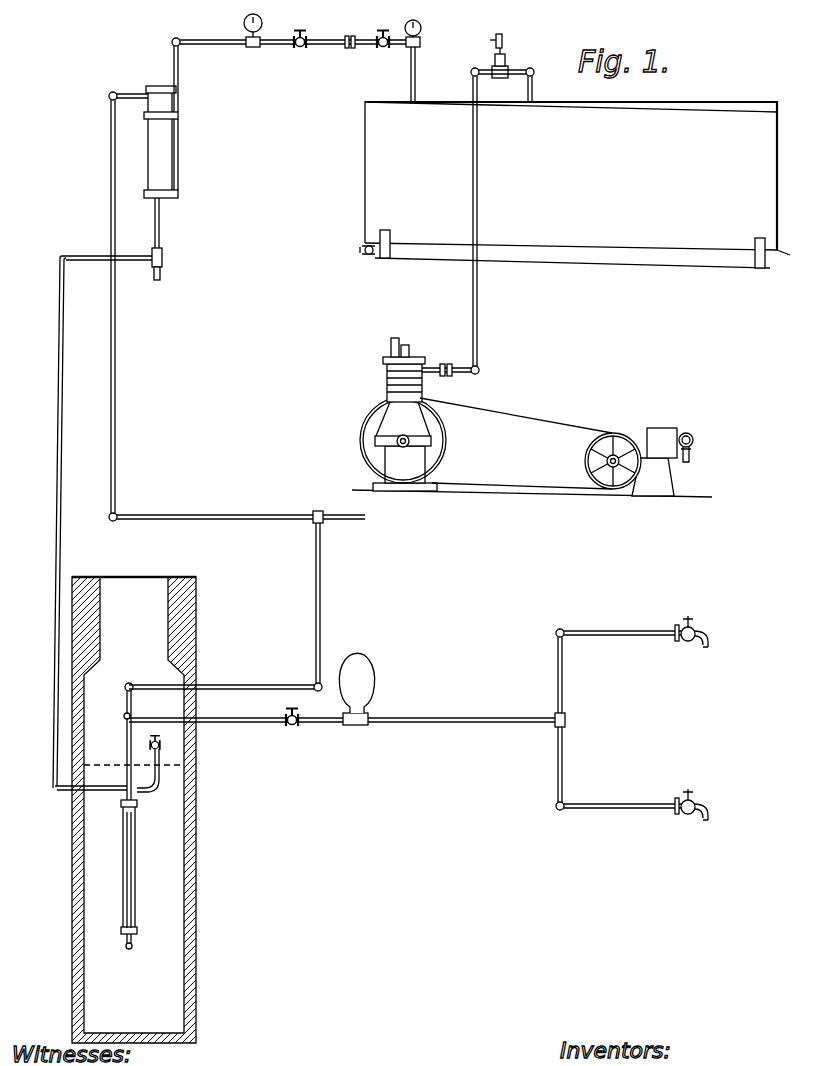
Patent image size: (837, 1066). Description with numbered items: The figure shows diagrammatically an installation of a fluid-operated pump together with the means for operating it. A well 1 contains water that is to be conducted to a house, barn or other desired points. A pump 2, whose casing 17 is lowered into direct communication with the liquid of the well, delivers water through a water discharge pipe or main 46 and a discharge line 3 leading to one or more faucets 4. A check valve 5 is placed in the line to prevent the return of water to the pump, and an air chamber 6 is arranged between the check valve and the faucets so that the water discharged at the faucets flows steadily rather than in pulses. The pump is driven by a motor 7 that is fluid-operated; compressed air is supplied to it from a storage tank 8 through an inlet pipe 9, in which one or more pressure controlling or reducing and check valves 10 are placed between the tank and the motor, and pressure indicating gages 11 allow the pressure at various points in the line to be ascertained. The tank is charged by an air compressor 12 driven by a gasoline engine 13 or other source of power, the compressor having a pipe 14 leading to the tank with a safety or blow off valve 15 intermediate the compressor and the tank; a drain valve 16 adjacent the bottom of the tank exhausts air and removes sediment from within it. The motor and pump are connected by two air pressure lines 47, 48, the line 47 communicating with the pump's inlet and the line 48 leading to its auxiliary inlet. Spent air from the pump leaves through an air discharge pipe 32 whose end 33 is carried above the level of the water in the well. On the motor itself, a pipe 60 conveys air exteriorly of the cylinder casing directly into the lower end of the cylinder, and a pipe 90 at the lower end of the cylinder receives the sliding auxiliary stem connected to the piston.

The well 1 is at (180, 906).
The pump 2 is at (135, 846).
The discharge line 3 is at (431, 723).
The faucets 4 is at (697, 648).
The check valve 5 is at (292, 730).
The air chamber 6 is at (372, 672).
The motor 7 is at (169, 176).
The storage tank 8 is at (680, 116).
The inlet pipe 9 is at (240, 45).
The pressure controlling or reducing and check valves 10 is at (301, 49).
The pressure indicating gages 11 is at (261, 22).
The air compressor 12 is at (386, 378).
The gasoline engine 13 is at (662, 428).
The pipe 14 is at (479, 324).
The safety or blow off valve 15 is at (503, 54).
The drain valve 16 is at (370, 258).
The casing 17 is at (122, 891).
The air discharge pipe 32 is at (161, 759).
The end of air discharge pipe 33 is at (156, 735).
The water discharge pipe or main 46 is at (127, 742).
The air pressure line 47 is at (117, 370).
The air pressure line 48 is at (58, 488).
The pipe 60 is at (175, 148).
The pipe 90 is at (160, 238).